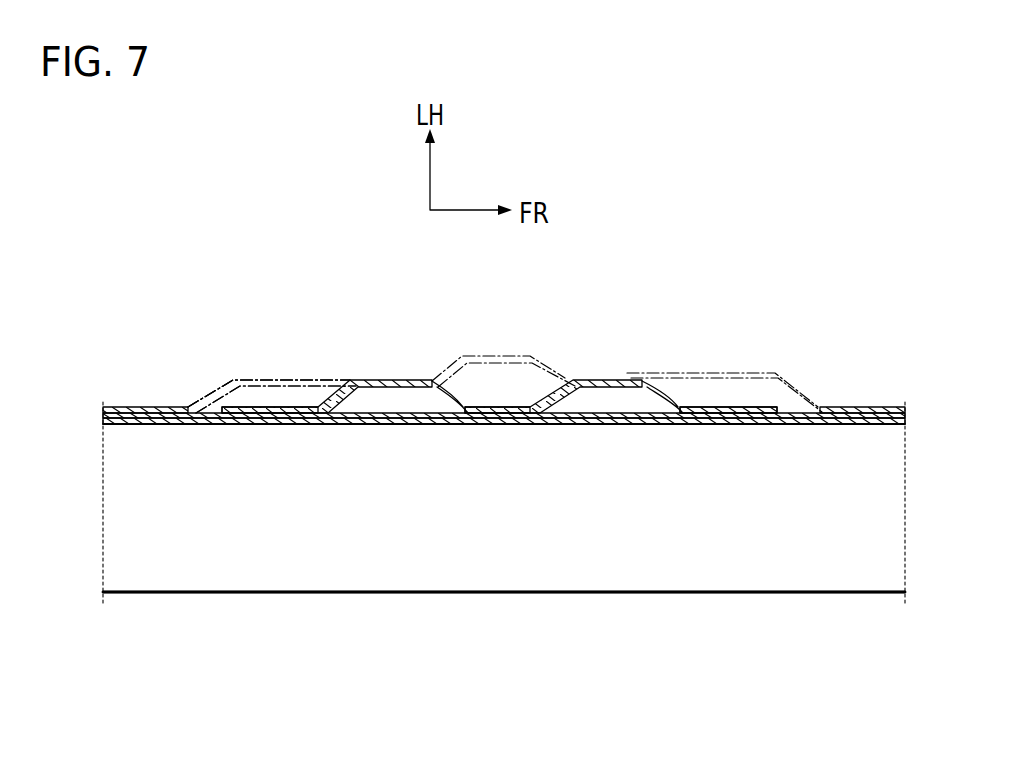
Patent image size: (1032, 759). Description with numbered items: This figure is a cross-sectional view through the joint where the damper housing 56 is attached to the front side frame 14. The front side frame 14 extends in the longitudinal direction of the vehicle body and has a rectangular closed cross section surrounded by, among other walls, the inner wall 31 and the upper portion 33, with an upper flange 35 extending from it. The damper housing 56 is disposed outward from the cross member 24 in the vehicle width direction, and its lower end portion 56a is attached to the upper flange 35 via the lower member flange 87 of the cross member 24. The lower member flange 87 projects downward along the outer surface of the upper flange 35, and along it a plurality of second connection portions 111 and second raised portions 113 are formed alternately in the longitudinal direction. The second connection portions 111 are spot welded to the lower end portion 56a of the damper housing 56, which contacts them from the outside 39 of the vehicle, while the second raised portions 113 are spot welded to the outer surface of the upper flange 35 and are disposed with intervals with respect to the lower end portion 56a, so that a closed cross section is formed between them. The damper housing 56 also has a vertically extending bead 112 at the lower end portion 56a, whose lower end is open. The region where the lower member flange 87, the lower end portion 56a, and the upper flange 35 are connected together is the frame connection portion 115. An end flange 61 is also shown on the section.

The front side frame 14 is at (343, 606).
The cross member 24 is at (269, 353).
The inner wall 31 is at (510, 568).
The upper portion 33 is at (538, 593).
The upper flange 35 is at (387, 419).
The outside of the vehicle 39 is at (395, 207).
The damper housing 56 is at (461, 348).
The lower end portion 56a is at (152, 406).
The end flange 61 is at (862, 406).
The lower member flange 87 is at (332, 380).
The second connection portion 111 is at (410, 387).
The bead 112 is at (508, 355).
The second raised portion 113 is at (254, 410).
The frame connection portion 115 is at (623, 421).